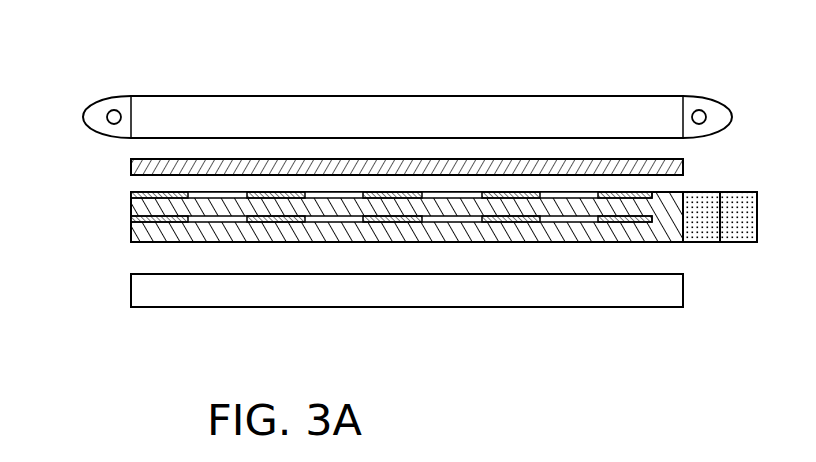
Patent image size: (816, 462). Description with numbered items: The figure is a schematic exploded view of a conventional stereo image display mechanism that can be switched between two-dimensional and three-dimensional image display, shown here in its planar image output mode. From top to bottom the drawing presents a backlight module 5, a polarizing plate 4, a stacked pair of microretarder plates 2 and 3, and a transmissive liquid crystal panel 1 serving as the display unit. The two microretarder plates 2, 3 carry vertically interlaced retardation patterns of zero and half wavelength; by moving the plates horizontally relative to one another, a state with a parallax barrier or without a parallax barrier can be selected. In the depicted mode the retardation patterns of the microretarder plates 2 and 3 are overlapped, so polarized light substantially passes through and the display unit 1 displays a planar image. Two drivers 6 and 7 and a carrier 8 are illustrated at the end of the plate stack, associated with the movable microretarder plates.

The transmissive liquid crystal panel 1 is at (131, 291).
The microretarder plate 2 is at (152, 221).
The microretarder plate 3 is at (131, 196).
The polarizing plate 4 is at (131, 166).
The backlight module 5 is at (185, 95).
The driver 6 is at (698, 243).
The driver 7 is at (737, 243).
The carrier 8 is at (683, 193).